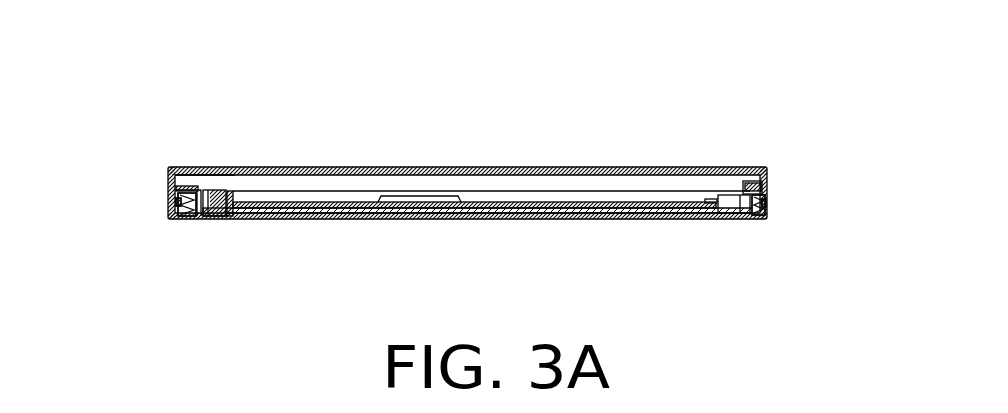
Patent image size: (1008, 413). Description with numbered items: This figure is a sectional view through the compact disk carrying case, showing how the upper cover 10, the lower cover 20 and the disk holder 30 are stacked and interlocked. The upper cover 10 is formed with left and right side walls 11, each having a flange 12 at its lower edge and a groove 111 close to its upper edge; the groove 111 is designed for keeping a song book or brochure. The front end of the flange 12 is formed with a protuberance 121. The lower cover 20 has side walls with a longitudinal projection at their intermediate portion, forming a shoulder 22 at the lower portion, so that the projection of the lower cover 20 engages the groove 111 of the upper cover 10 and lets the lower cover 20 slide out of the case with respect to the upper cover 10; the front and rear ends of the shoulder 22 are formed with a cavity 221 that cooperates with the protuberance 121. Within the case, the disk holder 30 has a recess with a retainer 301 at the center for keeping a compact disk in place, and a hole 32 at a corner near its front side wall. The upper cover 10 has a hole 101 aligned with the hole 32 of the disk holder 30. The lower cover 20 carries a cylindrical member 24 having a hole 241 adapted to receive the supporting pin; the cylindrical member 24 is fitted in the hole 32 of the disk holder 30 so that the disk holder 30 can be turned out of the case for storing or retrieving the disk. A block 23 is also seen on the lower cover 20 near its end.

The upper cover 10 is at (591, 172).
The side wall 11 is at (172, 184).
The groove 111 is at (183, 180).
The hole 101 is at (210, 178).
The flange 12 is at (175, 220).
The shoulder 22 is at (471, 204).
The protuberance 121 is at (173, 202).
The cavity 221 is at (471, 202).
The cylindrical member 24 is at (221, 192).
The hole 241 is at (208, 220).
The hole 32 is at (231, 194).
The disk holder 30 is at (285, 213).
The lower cover 20 is at (403, 209).
The retainer 301 is at (438, 198).
The stopper block 23 is at (721, 194).